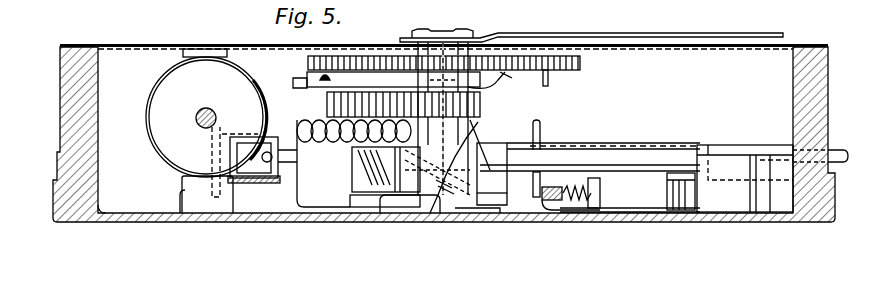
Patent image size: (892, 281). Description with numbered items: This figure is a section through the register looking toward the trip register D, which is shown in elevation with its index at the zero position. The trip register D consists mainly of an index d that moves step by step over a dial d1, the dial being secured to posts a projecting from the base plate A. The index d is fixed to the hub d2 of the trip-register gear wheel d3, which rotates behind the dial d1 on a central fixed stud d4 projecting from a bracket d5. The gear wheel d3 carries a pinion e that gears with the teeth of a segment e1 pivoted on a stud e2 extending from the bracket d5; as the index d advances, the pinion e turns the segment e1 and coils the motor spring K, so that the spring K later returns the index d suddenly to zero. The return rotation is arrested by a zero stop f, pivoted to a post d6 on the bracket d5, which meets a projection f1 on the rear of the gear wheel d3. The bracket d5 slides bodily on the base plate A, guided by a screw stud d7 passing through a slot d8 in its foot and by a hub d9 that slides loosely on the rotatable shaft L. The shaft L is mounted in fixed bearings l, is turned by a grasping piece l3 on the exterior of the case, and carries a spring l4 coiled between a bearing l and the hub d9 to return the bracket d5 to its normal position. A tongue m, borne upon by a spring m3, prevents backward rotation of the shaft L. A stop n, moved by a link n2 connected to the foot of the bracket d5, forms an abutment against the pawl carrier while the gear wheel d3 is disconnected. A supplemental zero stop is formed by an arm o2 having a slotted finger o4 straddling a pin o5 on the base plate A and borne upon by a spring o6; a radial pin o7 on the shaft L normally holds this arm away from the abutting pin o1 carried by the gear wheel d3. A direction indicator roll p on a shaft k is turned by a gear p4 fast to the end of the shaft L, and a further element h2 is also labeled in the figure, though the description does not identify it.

The base plate A is at (757, 222).
The posts a is at (98, 68).
The dial d1 is at (127, 46).
The index d is at (706, 33).
The hub d2 is at (478, 38).
The trip register D is at (383, 35).
The direction indicator roll p is at (147, 96).
The shaft k is at (197, 116).
The gear p4 is at (210, 150).
The bracket h2 is at (180, 188).
The trip-register gear wheel d3 is at (582, 63).
The central fixed stud d4 is at (470, 128).
The zero stop f is at (399, 92).
The post d6 is at (300, 74).
The projection f1 is at (510, 79).
The abutting pin o1 is at (548, 80).
The segment e1 is at (327, 103).
The pinion e is at (492, 117).
The motor spring K is at (354, 163).
The tongue m is at (411, 168).
The spring m3 is at (454, 167).
The screw stud d7 is at (352, 191).
The slot d8 is at (385, 213).
The stud e2 is at (435, 213).
The bracket d5 is at (470, 213).
The hub d9 is at (492, 174).
The spring l4 is at (489, 183).
The shaft L is at (628, 143).
The radial pin o7 is at (540, 128).
The arm o2 is at (571, 192).
The spring o6 is at (585, 222).
The pin o5 is at (600, 190).
The slotted finger o4 is at (615, 222).
The link n2 is at (545, 248).
The stop n is at (667, 188).
The bearings l is at (710, 145).
The grasping piece l3 is at (838, 148).